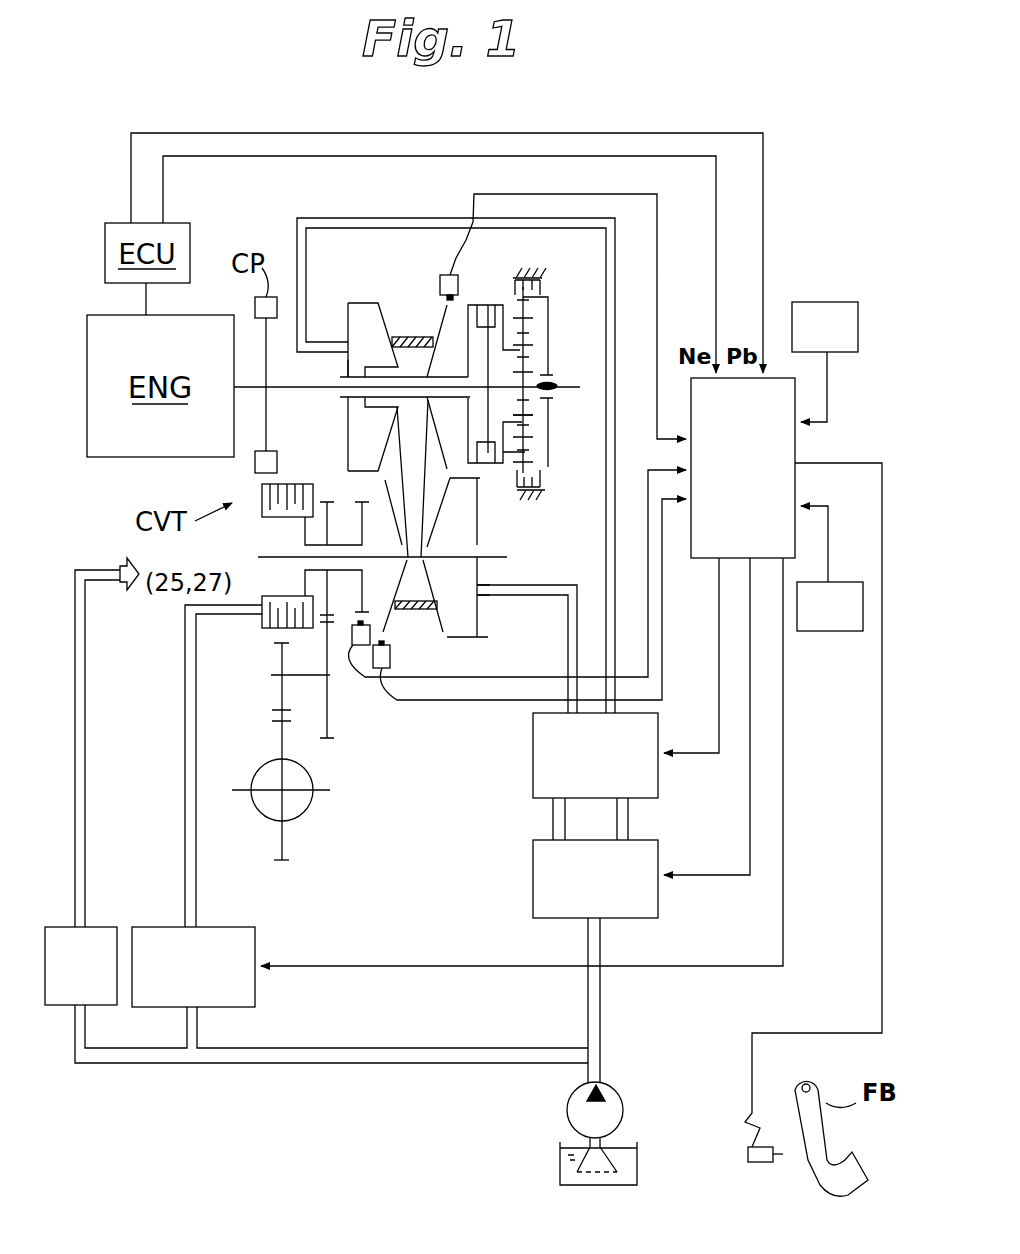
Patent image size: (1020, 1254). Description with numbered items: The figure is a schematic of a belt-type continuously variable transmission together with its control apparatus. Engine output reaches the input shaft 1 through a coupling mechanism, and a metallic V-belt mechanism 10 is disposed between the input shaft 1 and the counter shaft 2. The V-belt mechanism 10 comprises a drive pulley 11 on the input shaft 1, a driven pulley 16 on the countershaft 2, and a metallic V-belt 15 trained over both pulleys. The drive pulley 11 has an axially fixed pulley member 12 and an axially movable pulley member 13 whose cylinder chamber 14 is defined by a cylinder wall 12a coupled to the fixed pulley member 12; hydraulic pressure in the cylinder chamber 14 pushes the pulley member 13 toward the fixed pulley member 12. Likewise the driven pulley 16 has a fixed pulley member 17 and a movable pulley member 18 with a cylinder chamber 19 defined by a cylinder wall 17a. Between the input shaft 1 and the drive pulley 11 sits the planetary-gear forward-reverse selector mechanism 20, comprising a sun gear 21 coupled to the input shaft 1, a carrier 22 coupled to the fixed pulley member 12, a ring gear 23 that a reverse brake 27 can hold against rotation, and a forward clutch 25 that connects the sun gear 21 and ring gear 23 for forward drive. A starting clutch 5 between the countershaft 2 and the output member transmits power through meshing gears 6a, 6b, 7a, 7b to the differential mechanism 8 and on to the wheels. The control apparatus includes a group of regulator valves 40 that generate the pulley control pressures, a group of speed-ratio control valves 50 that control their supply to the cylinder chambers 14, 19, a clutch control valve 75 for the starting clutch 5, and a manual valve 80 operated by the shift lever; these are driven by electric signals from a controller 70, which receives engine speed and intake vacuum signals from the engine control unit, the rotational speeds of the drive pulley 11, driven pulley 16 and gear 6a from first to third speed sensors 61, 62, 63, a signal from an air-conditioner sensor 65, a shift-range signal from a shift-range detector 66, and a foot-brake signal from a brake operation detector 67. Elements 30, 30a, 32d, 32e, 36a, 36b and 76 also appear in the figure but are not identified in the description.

The input shaft 1 is at (295, 396).
The counter shaft 2 is at (364, 558).
The starting clutch 5 is at (294, 483).
The gear 6a is at (328, 487).
The gear 6b is at (331, 741).
The gear 7a is at (276, 643).
The gear 7b is at (285, 862).
The differential mechanism 8 is at (305, 806).
The metallic V-belt mechanism 10 is at (490, 508).
The drive pulley 11 is at (372, 286).
The axially fixed pulley member 12 is at (437, 330).
The cylinder wall 12a is at (346, 361).
The pulley member 13 is at (358, 302).
The cylinder chamber 14 is at (385, 356).
The metallic V-belt 15 is at (426, 484).
The driven pulley 16 is at (496, 636).
The fixed pulley member 17 is at (386, 556).
The cylinder wall 17a is at (483, 616).
The pulley member 18 is at (440, 628).
The cylinder chamber 19 is at (468, 553).
The planetary-gear forward-reverse selector mechanism 20 is at (559, 282).
The sun gear 21 is at (557, 386).
The carrier 22 is at (528, 416).
The ring gear 23 is at (550, 469).
The forward clutch 25 is at (488, 305).
The reverse brake 27 is at (543, 287).
The oil pump 30 is at (624, 1109).
The oil passage 30a is at (602, 998).
The oil passage 32d is at (362, 1047).
The oil passage 32e is at (138, 1063).
The oil passage to drive side cylinder 36a is at (413, 198).
The oil passage to driven side cylinder 36b is at (571, 584).
The group of regulator valves 40 is at (578, 900).
The group of speed-ratio control valves 50 is at (578, 775).
The first speed sensor 61 is at (441, 275).
The second speed sensor 62 is at (390, 658).
The third speed sensor 63 is at (350, 645).
The air-conditioner sensor 65 is at (820, 302).
The shift-range detector 66 is at (828, 631).
The brake operation detector 67 is at (760, 1166).
The controller 70 is at (726, 492).
The clutch control valve 75 is at (175, 987).
The oil passage 76 is at (185, 858).
The manual valve 80 is at (63, 987).